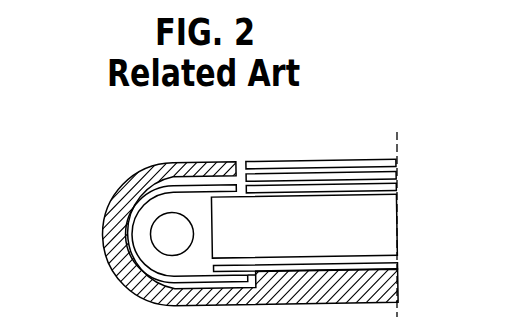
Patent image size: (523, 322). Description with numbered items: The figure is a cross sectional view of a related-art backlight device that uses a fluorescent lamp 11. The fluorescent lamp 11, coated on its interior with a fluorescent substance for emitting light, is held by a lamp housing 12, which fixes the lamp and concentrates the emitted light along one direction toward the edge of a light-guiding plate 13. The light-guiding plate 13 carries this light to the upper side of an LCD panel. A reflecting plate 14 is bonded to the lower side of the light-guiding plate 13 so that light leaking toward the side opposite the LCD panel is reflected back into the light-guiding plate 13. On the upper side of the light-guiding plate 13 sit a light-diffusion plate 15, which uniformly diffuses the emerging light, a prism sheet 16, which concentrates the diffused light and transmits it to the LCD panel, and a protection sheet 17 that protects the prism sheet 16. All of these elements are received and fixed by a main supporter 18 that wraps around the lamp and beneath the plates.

The fluorescent lamp 11 is at (166, 221).
The lamp housing 12 is at (128, 233).
The light-guiding plate 13 is at (398, 228).
The reflecting plate 14 is at (398, 261).
The light-diffusion plate 15 is at (398, 189).
The prism sheet 16 is at (398, 175).
The protection sheet 17 is at (317, 163).
The main supporter 18 is at (398, 288).